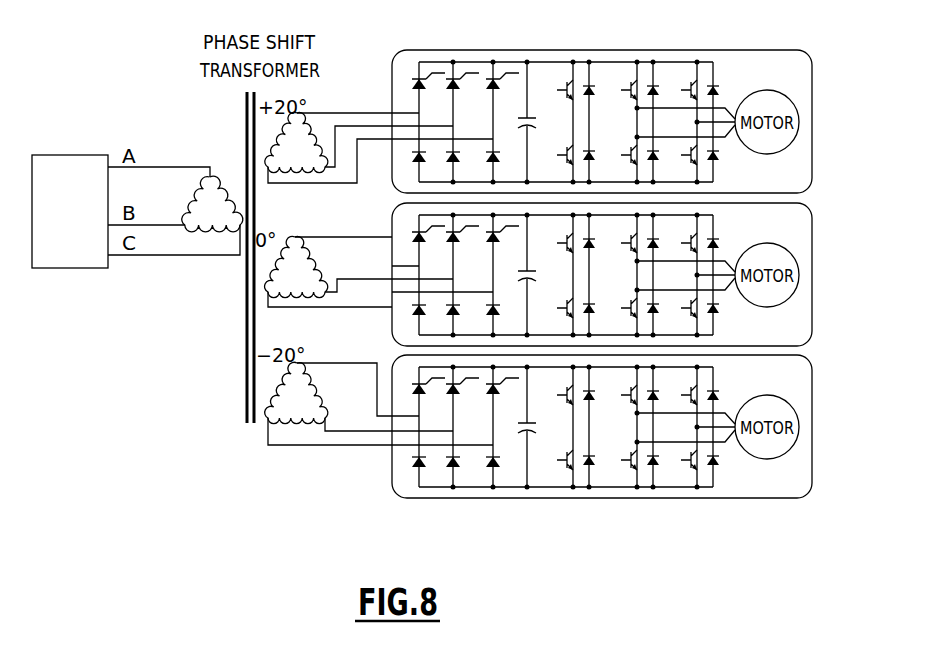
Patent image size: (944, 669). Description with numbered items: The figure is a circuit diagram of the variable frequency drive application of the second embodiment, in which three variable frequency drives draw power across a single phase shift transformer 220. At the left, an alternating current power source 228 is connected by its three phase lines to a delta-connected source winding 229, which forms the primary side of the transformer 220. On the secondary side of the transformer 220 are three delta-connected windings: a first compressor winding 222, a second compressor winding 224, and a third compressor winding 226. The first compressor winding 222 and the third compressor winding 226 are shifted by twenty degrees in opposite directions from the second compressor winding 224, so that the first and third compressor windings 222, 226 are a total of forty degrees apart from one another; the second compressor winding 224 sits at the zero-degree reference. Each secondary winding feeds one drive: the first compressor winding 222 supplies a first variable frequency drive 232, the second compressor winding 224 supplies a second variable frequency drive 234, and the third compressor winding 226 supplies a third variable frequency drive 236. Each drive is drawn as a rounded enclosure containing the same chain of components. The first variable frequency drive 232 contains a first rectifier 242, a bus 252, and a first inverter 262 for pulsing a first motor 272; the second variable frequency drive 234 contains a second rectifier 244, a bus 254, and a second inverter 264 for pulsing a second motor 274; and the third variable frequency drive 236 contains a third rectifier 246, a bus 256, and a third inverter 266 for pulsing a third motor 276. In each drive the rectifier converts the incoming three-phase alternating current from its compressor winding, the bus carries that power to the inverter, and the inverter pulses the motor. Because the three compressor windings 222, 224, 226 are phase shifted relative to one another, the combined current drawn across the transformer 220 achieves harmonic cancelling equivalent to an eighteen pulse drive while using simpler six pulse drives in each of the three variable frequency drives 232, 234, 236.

The transformer 220 is at (204, 300).
The first compressor winding 222 is at (313, 138).
The second compressor winding 224 is at (270, 303).
The third compressor winding 226 is at (274, 448).
The alternating current power source 228 is at (91, 223).
The source winding 229 is at (216, 190).
The first variable frequency drive 232 is at (393, 52).
The second variable frequency drive 234 is at (812, 298).
The third variable frequency drive 236 is at (396, 497).
The first rectifier 242 is at (446, 62).
The second rectifier 244 is at (419, 335).
The third rectifier 246 is at (437, 487).
The bus 252 is at (528, 80).
The bus 254 is at (528, 216).
The bus 256 is at (527, 487).
The first inverter 262 is at (622, 62).
The second inverter 264 is at (716, 216).
The third inverter 266 is at (645, 487).
The first motor 272 is at (784, 148).
The second motor 274 is at (784, 301).
The third motor 276 is at (784, 453).